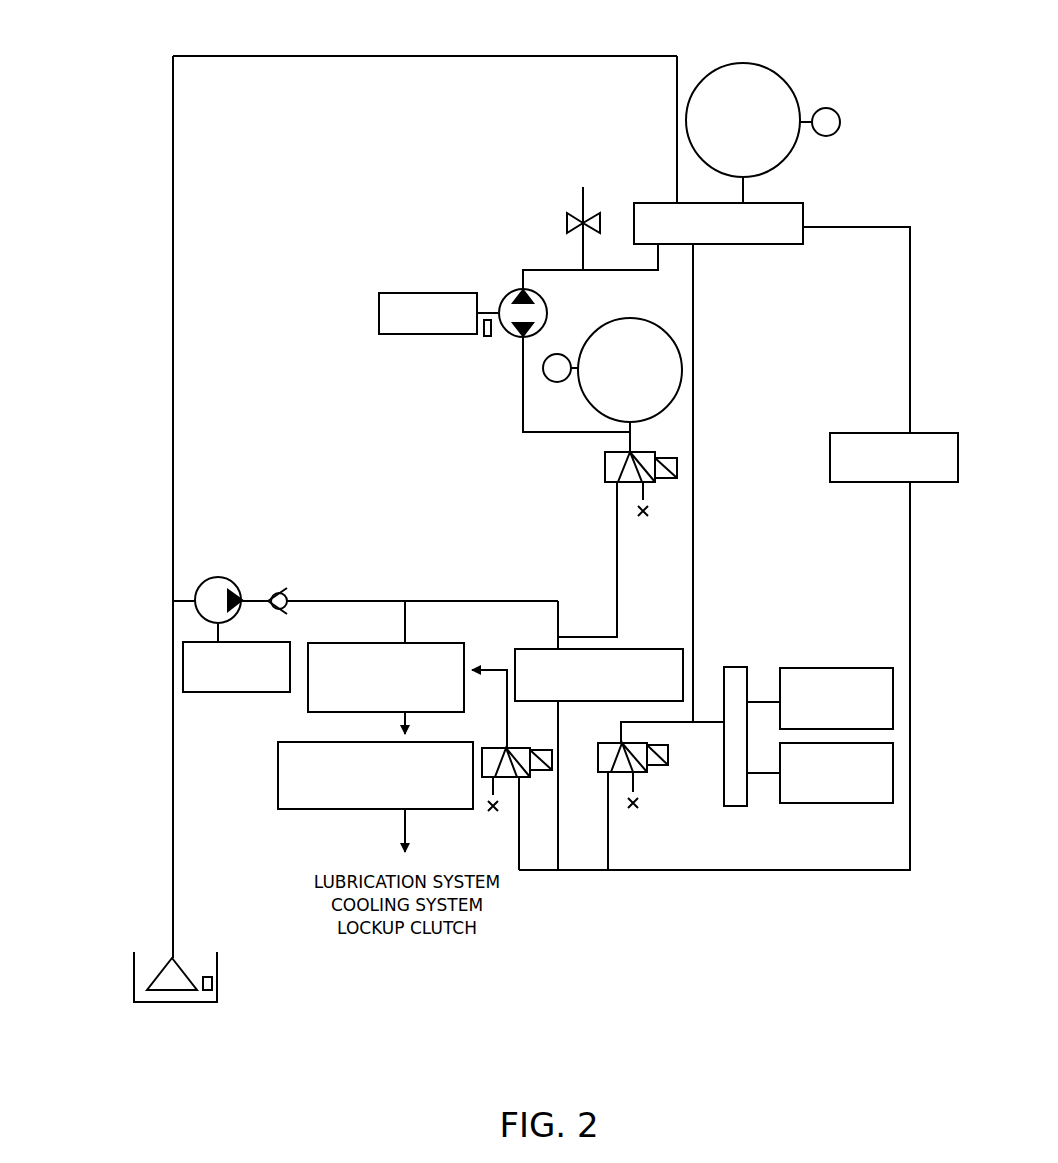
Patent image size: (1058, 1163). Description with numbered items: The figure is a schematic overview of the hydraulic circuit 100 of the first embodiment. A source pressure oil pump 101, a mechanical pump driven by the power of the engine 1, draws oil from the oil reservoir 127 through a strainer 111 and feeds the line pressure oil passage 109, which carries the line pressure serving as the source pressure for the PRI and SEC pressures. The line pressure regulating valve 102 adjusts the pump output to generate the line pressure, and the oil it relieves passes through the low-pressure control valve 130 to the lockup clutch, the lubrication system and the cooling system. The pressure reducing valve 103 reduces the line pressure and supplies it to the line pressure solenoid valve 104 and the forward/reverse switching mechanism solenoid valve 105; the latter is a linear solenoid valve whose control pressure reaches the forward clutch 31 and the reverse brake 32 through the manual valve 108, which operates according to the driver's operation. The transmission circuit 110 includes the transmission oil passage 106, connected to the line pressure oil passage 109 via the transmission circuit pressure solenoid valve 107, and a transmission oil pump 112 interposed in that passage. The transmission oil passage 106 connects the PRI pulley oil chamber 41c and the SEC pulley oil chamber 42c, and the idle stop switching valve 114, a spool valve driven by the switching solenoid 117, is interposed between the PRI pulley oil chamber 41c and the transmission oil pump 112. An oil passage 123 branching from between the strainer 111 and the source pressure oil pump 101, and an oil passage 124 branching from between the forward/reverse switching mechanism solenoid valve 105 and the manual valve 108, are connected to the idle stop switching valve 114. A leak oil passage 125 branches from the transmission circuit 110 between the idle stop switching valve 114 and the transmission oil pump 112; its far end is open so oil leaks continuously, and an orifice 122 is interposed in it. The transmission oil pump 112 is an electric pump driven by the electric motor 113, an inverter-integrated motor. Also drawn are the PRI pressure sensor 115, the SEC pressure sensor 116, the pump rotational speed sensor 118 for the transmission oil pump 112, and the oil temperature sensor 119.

The engine 1 is at (247, 642).
The forward clutch 31 is at (858, 668).
The reverse brake 32 is at (862, 804).
The PRI pulley oil chamber 41c is at (790, 97).
The SEC pulley oil chamber 42c is at (621, 319).
The hydraulic circuit 100 is at (112, 828).
The source pressure oil pump 101 is at (232, 581).
The line pressure regulating valve 102 is at (462, 644).
The pressure reducing valve 103 is at (622, 649).
The line pressure solenoid valve 104 is at (508, 748).
The forward/reverse switching mechanism solenoid valve 105 is at (603, 743).
The transmission oil passage 106 is at (523, 405).
The transmission circuit pressure solenoid valve 107 is at (605, 466).
The manual valve 108 is at (733, 807).
The line pressure oil passage 109 is at (478, 600).
The transmission circuit 110 is at (522, 156).
The strainer 111 is at (166, 960).
The transmission oil pump 112 is at (516, 293).
The electric motor 113 is at (432, 334).
The idle stop switching valve 114 is at (785, 244).
The PRI pressure sensor 115 is at (838, 112).
The SEC pressure sensor 116 is at (557, 382).
The switching solenoid 117 is at (853, 433).
The pump rotational speed sensor 118 is at (487, 338).
The oil temperature sensor 119 is at (208, 977).
The orifice 122 is at (567, 222).
The oil passage 123 is at (432, 56).
The oil passage 124 is at (693, 530).
The leak oil passage 125 is at (583, 259).
The oil reservoir 127 is at (215, 992).
The low-pressure control valve 130 is at (297, 742).